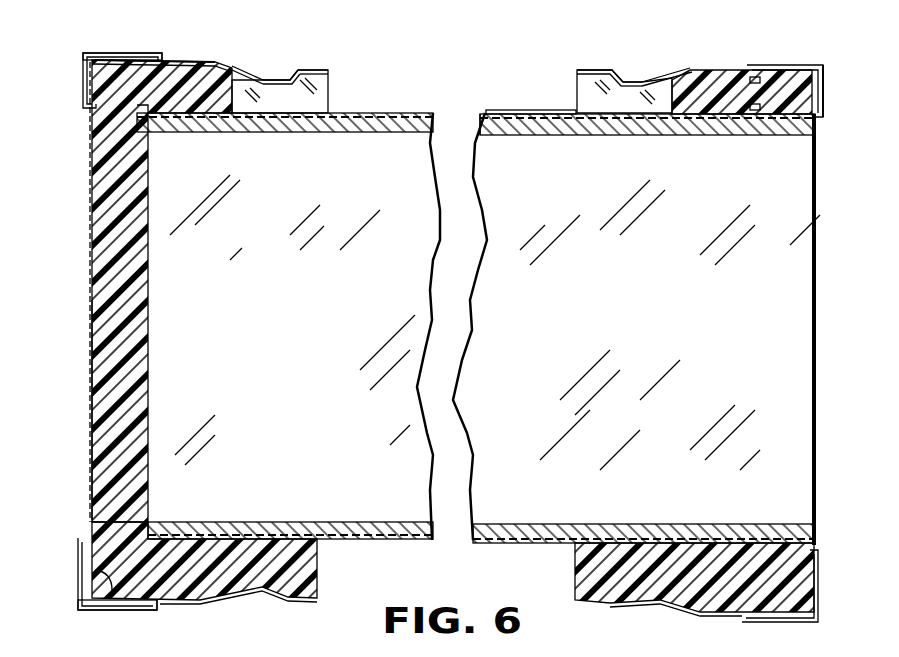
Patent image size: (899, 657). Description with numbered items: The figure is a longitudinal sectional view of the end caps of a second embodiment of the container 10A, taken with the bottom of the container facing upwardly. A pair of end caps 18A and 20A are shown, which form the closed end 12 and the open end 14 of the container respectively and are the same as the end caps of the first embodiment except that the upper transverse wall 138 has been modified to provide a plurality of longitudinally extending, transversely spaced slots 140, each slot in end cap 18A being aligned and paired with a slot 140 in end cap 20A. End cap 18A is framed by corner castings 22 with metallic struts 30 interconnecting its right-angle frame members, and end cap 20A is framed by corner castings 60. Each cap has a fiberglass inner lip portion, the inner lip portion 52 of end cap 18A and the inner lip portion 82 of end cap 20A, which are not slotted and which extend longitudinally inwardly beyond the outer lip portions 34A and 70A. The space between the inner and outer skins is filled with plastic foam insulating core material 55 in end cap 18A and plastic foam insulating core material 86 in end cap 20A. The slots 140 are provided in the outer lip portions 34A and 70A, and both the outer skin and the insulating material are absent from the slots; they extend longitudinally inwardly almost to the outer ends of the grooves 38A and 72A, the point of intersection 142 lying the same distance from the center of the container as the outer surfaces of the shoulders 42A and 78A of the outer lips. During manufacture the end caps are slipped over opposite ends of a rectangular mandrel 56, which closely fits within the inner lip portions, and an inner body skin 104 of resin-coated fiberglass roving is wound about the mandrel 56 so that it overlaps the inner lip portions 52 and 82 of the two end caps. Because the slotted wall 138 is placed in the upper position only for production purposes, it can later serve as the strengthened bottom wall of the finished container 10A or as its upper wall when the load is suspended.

The container 10A is at (96, 622).
The closed end 12 is at (78, 348).
The open end 14 is at (822, 370).
The end cap 18A is at (108, 46).
The end cap 20A is at (793, 58).
The corner casting 22 is at (83, 100).
The metallic strut 30 is at (90, 586).
The outer lip portion 34A is at (196, 604).
The groove 38A is at (288, 78).
The shoulder 42A is at (335, 72).
The inner lip portion 52 is at (297, 132).
The plastic foam insulating core material 55 is at (108, 275).
The mandrel 56 is at (322, 520).
The corner casting 60 is at (826, 102).
The outer lip portion 70A is at (700, 614).
The groove 72A is at (622, 80).
The shoulder 78A is at (597, 72).
The inner lip portion 82 is at (622, 136).
The plastic foam insulating core material 86 is at (592, 568).
The inner body skin 104 is at (506, 112).
The upper transverse wall 138 is at (192, 60).
The slot 140 is at (316, 90).
The point of intersection 142 is at (230, 66).